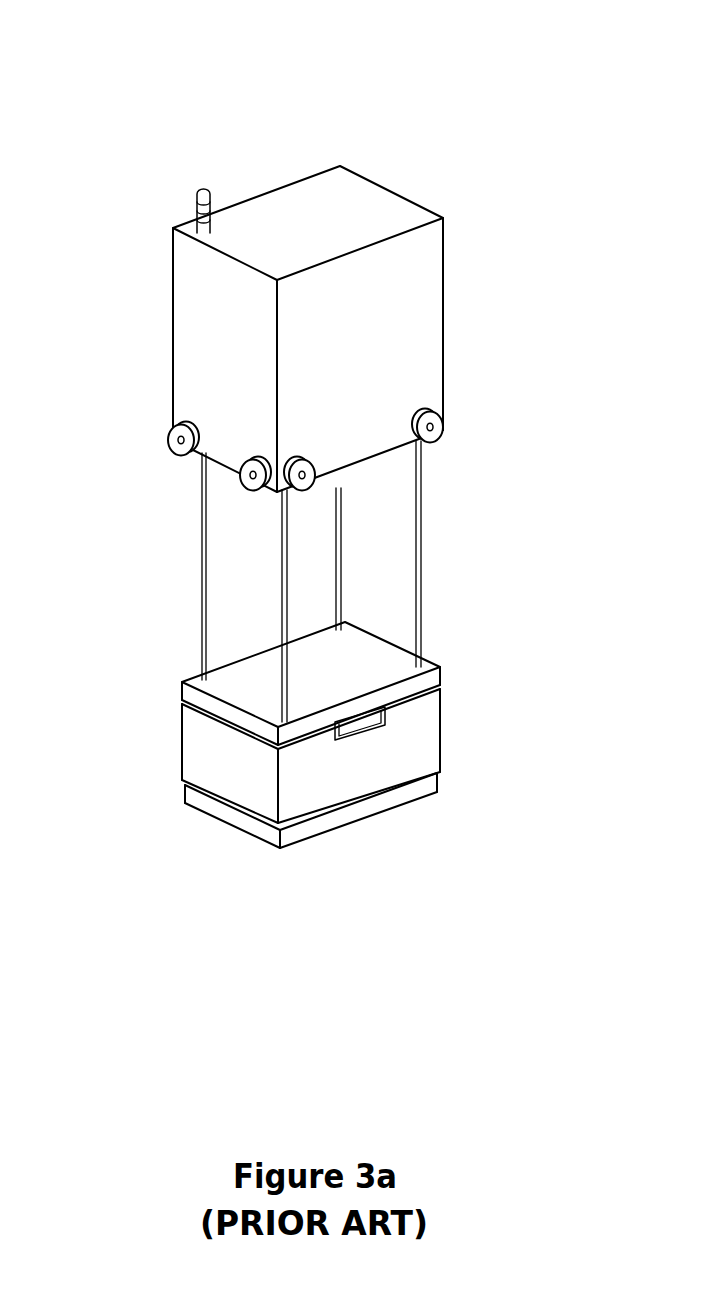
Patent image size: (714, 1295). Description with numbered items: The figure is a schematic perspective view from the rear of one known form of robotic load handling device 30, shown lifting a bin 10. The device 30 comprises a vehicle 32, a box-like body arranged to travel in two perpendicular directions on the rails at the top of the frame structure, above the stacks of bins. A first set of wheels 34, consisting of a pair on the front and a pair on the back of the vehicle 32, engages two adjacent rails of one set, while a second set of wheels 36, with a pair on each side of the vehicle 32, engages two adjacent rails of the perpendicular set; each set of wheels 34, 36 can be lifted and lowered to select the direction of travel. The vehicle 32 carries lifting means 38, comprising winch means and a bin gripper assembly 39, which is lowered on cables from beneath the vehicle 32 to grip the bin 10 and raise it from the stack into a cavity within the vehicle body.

The robotic load handling device 30 is at (143, 110).
The vehicle 32 is at (383, 305).
The first set of wheels 34 is at (437, 430).
The second set of wheels 36 is at (173, 428).
The lifting means 38 is at (422, 557).
The bin gripper assembly 39 is at (380, 670).
The bin 10 is at (410, 757).